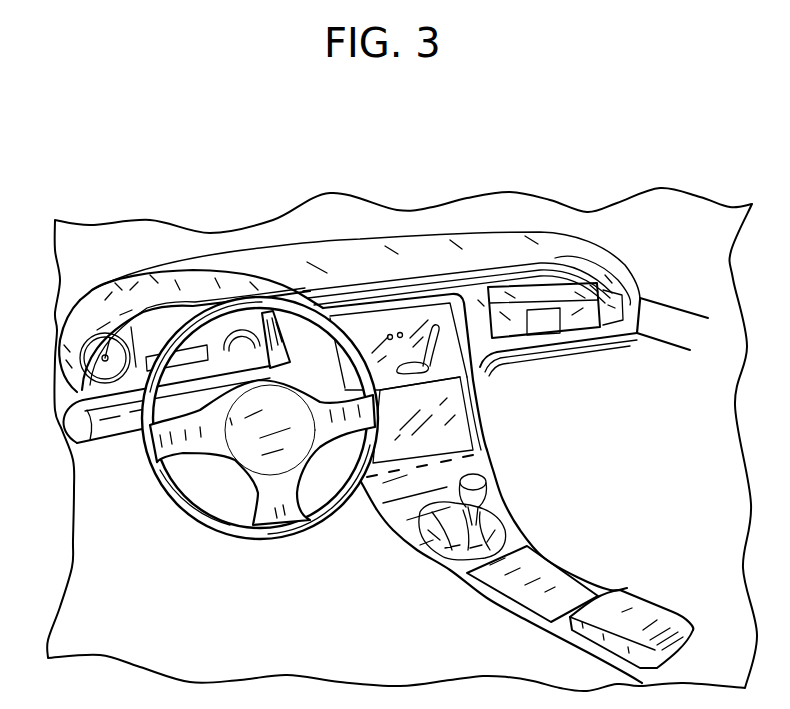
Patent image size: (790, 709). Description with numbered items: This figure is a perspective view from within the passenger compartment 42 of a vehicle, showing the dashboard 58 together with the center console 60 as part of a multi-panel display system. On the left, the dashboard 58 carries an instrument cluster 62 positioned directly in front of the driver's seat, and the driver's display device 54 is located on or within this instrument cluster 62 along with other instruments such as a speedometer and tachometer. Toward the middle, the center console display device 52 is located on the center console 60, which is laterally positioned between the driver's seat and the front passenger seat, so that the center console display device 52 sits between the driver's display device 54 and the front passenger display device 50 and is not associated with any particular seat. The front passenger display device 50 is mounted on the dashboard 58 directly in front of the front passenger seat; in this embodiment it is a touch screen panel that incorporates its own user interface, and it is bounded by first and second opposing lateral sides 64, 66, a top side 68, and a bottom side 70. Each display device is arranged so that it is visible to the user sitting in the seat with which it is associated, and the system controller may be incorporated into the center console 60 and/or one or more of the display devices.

The passenger compartment 42 is at (652, 176).
The front passenger display device 50 is at (573, 272).
The center console display device 52 is at (393, 323).
The driver's display device 54 is at (183, 313).
The dashboard 58 is at (432, 250).
The center console 60 is at (480, 465).
The instrument cluster 62 is at (77, 388).
The first lateral side 64 is at (488, 300).
The second lateral side 66 is at (613, 300).
The top side 68 is at (527, 287).
The bottom side 70 is at (583, 340).